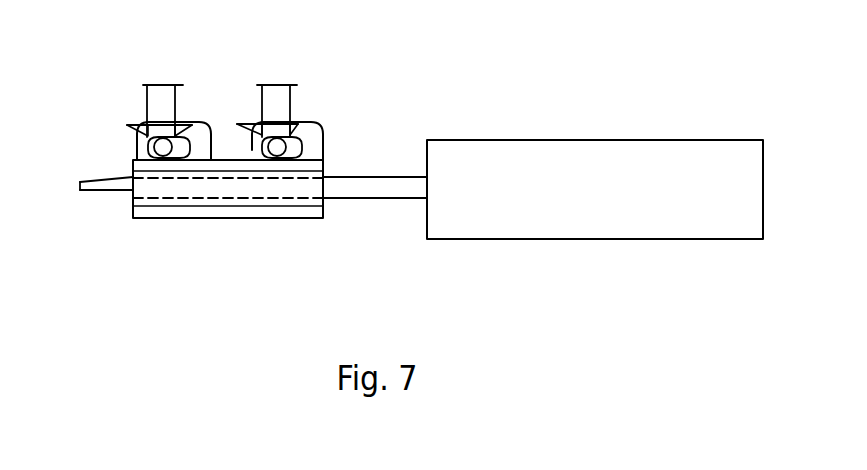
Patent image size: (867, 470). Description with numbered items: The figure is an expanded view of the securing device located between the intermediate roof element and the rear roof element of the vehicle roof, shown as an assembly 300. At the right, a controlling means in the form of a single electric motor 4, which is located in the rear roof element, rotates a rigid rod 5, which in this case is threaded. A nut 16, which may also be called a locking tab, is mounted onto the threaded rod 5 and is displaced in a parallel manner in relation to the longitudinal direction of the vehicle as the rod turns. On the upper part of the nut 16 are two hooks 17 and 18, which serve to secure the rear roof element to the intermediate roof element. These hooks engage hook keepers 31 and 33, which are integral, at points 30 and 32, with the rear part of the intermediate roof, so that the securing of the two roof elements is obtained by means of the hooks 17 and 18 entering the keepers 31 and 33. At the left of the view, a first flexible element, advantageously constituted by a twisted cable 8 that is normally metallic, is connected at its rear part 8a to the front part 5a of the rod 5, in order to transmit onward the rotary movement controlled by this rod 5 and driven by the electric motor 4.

The electric motor 4 is at (612, 165).
The rigid rod 5 is at (377, 190).
The front part of the rod 5a is at (132, 197).
The twisted cable 8 is at (72, 194).
The rear part of the twisted cable 8a is at (130, 178).
The nut 16 is at (175, 210).
The hook 17 is at (140, 122).
The hook 18 is at (248, 127).
The point 30 is at (277, 93).
The hook keeper 31 is at (293, 122).
The point 32 is at (160, 93).
The hook keeper 33 is at (175, 137).
The connector assembly 300 is at (217, 235).